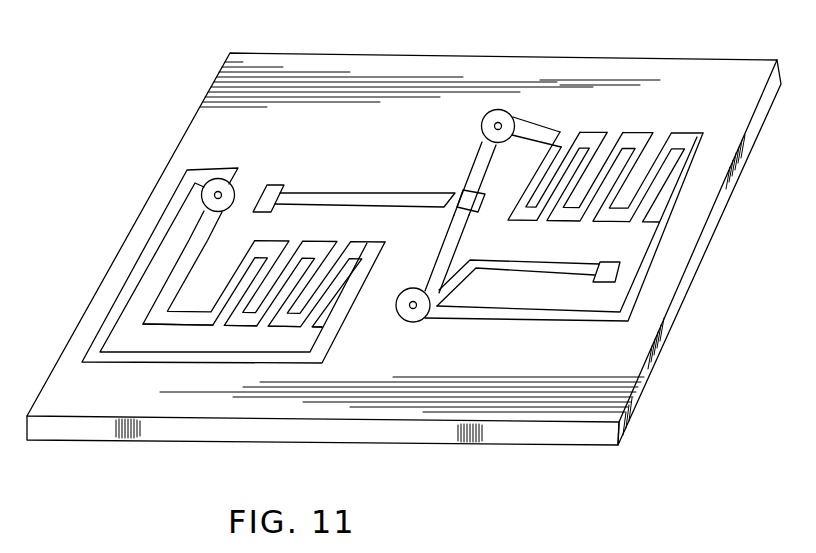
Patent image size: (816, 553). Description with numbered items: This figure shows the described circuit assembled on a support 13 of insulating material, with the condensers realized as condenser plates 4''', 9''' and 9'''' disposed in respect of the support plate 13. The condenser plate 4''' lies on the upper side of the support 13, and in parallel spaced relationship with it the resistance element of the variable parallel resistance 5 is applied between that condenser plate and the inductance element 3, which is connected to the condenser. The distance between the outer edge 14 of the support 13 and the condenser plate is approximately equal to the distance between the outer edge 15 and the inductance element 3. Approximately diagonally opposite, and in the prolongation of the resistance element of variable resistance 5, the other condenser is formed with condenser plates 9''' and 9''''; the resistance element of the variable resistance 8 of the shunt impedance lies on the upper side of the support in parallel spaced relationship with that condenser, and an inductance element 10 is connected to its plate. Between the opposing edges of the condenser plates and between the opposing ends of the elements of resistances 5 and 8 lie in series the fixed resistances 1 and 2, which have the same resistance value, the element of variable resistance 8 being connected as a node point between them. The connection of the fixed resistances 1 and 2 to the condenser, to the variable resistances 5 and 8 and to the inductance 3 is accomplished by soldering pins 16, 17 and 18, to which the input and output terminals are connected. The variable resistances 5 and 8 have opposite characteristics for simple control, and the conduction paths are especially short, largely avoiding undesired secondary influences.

The fixed resistance 1 is at (434, 264).
The fixed resistance 2 is at (481, 168).
The inductance element 3 is at (665, 225).
The condenser plate 4''' is at (605, 180).
The variable parallel resistance 5 is at (533, 274).
The variable resistance 8 is at (348, 195).
The condenser plate 9''' is at (264, 268).
The condenser plate 9'''' is at (232, 332).
The inductance element 10 is at (137, 272).
The support 13 is at (689, 307).
The outer edge 14 is at (490, 56).
The outer edge 15 is at (407, 424).
The soldering pin 16 is at (515, 121).
The soldering pin 17 is at (404, 320).
The soldering pin 18 is at (233, 190).